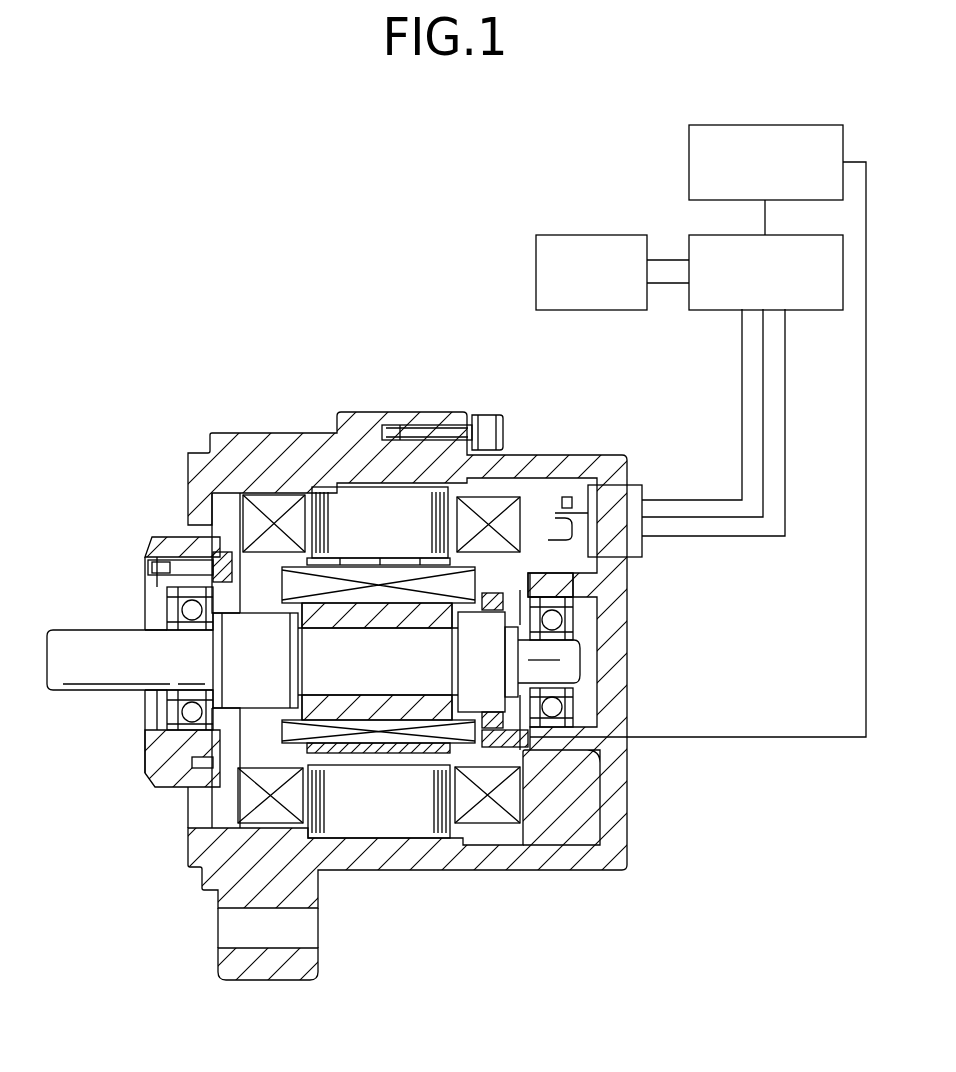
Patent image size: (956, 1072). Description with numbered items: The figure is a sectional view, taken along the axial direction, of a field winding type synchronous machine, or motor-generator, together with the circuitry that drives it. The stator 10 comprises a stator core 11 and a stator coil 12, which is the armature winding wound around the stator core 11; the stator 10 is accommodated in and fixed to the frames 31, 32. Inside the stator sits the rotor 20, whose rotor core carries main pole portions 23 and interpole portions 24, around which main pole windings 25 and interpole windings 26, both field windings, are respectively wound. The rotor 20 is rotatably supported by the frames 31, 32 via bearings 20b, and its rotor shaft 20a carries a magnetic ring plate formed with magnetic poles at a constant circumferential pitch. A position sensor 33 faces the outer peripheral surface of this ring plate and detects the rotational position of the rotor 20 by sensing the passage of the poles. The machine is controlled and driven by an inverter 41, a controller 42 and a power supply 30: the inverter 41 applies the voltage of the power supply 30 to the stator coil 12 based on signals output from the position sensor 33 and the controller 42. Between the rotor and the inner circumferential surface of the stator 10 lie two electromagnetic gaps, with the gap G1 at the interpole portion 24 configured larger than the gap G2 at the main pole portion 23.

The stator 10 is at (380, 645).
The stator core 11 is at (357, 520).
The stator coil 12 is at (290, 490).
The rotor 20 is at (370, 645).
The rotor shaft 20a is at (83, 655).
The bearings 20b is at (148, 729).
The main pole portion 23 is at (425, 590).
The interpole portion 24 is at (348, 703).
The main pole windings 25 is at (535, 580).
The interpole windings 26 is at (432, 745).
The electromagnetic gap G1 is at (390, 760).
The electromagnetic gap G2 is at (398, 557).
The power supply 30 is at (558, 245).
The frame 31 is at (243, 432).
The frame 32 is at (603, 655).
The position sensor 33 is at (500, 748).
The inverter 41 is at (702, 234).
The controller 42 is at (689, 138).